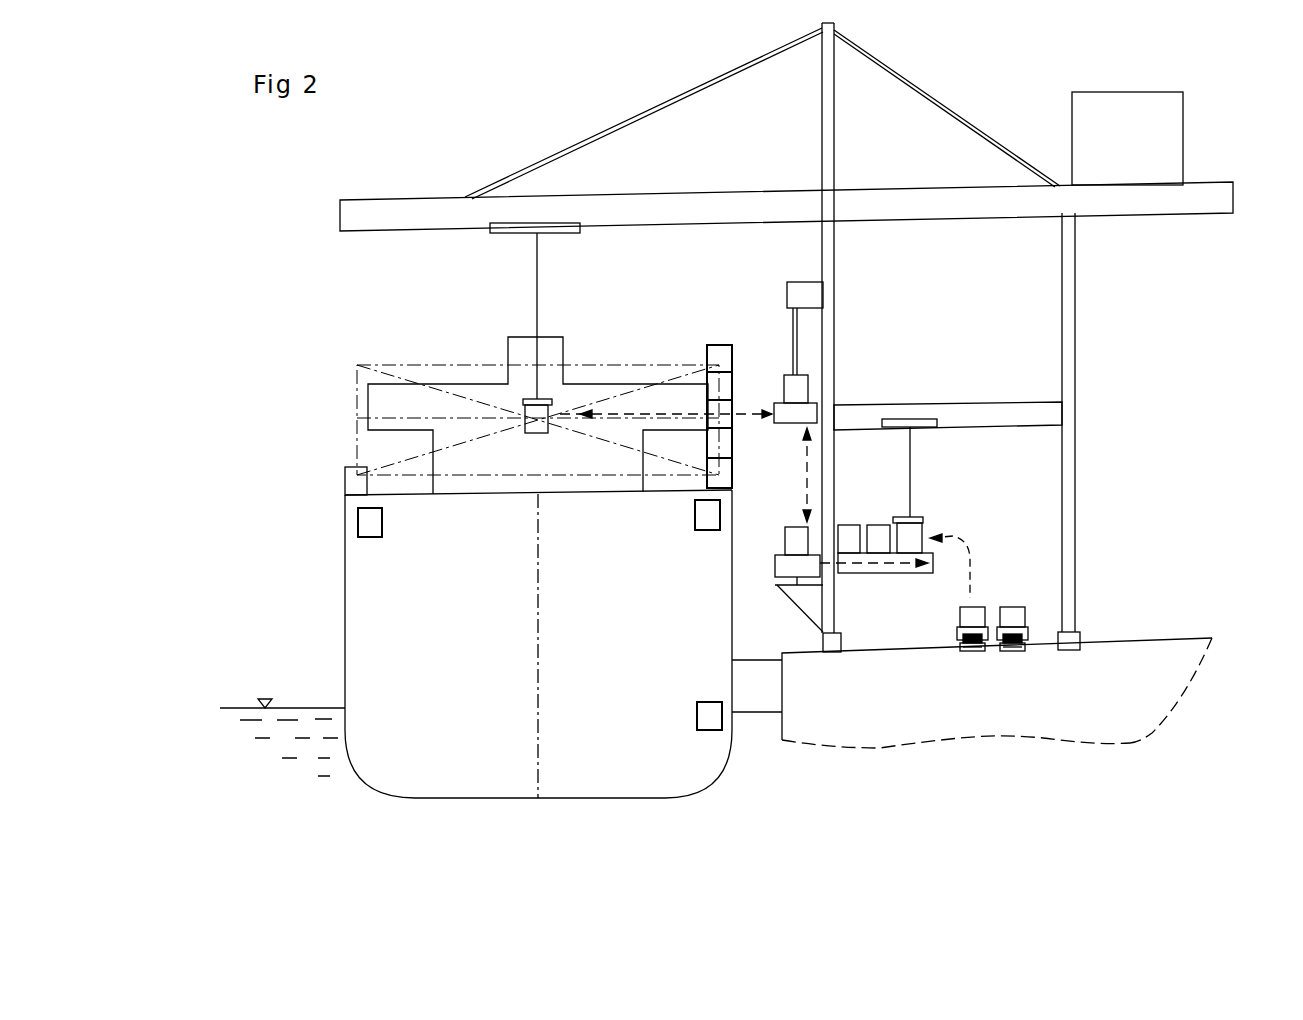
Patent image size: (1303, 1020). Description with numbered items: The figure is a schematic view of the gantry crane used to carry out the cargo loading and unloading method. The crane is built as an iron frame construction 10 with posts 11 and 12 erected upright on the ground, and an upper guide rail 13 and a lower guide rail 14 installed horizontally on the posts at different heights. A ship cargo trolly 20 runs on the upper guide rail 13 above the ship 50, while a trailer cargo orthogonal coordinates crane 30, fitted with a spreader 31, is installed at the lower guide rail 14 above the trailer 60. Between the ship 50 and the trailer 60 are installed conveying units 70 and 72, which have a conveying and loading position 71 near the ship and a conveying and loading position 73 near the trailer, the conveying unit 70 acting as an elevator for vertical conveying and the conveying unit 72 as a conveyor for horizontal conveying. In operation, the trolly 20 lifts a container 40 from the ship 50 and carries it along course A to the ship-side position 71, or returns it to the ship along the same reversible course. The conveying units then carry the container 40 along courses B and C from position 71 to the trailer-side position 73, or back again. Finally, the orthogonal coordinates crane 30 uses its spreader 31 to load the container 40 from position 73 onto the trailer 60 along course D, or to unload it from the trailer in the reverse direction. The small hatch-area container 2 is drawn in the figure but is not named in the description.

The container 2 is at (532, 398).
The iron frame construction 10 is at (962, 112).
The post 11 is at (826, 308).
The post 12 is at (1068, 306).
The upper guide rail 13 is at (1190, 193).
The lower guide rail 14 is at (975, 413).
The ship cargo trolly 20 is at (508, 233).
The trailer cargo orthogonal coordinates crane 30 is at (912, 415).
The spreader 31 is at (921, 518).
The container 40 is at (520, 415).
The ship 50 is at (371, 663).
The trailer 60 is at (1012, 648).
The conveying unit 70 is at (798, 335).
The conveying and loading position 71 is at (783, 412).
The conveying unit 72 is at (890, 575).
The conveying and loading position 73 is at (927, 573).
The course A is at (650, 415).
The course B is at (825, 452).
The course C is at (858, 566).
The course D is at (972, 562).